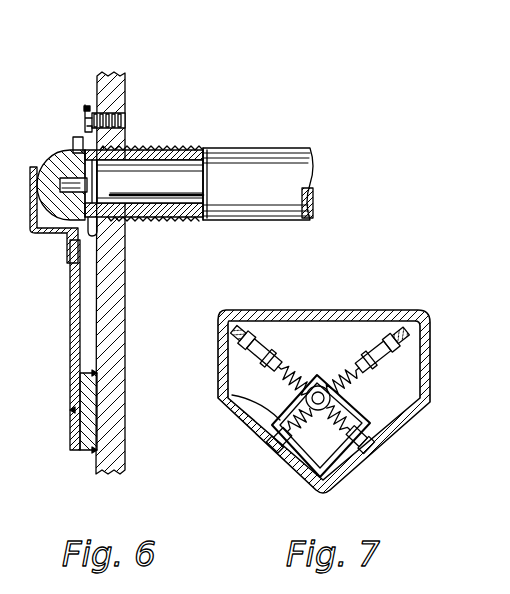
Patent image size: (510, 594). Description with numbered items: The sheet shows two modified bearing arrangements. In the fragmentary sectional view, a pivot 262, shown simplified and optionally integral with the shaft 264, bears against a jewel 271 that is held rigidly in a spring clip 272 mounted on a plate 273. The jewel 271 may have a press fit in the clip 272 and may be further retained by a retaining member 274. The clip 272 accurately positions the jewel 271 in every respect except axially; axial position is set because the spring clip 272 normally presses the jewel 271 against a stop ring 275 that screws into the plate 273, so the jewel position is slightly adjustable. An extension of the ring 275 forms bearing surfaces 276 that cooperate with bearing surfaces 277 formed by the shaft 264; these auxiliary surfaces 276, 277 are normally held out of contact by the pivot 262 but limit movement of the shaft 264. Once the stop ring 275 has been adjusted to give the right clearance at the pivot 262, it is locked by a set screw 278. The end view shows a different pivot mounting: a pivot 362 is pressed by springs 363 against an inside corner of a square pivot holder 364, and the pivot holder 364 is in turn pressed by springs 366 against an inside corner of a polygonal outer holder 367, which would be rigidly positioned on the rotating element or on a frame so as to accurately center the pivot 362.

In FIG. 6, the pivot 262 is at (100, 205).
In FIG. 6, the shaft 264 is at (173, 178).
In FIG. 6, the jewel 271 is at (58, 156).
In FIG. 6, the spring clip 272 is at (74, 410).
In FIG. 6, the plate 273 is at (97, 457).
In FIG. 6, the retaining member 274 is at (35, 236).
In FIG. 6, the stop ring 275 is at (84, 140).
In FIG. 6, the bearing surfaces 276 is at (195, 221).
In FIG. 6, the bearing surfaces 277 is at (206, 184).
In FIG. 6, the set screw 278 is at (87, 104).
In FIG. 7, the pivot 362 is at (338, 398).
In FIG. 7, the springs 363 is at (288, 455).
In FIG. 7, the square pivot holder 364 is at (280, 422).
In FIG. 7, the springs 366 is at (250, 347).
In FIG. 7, the polygonal outer holder 367 is at (343, 478).